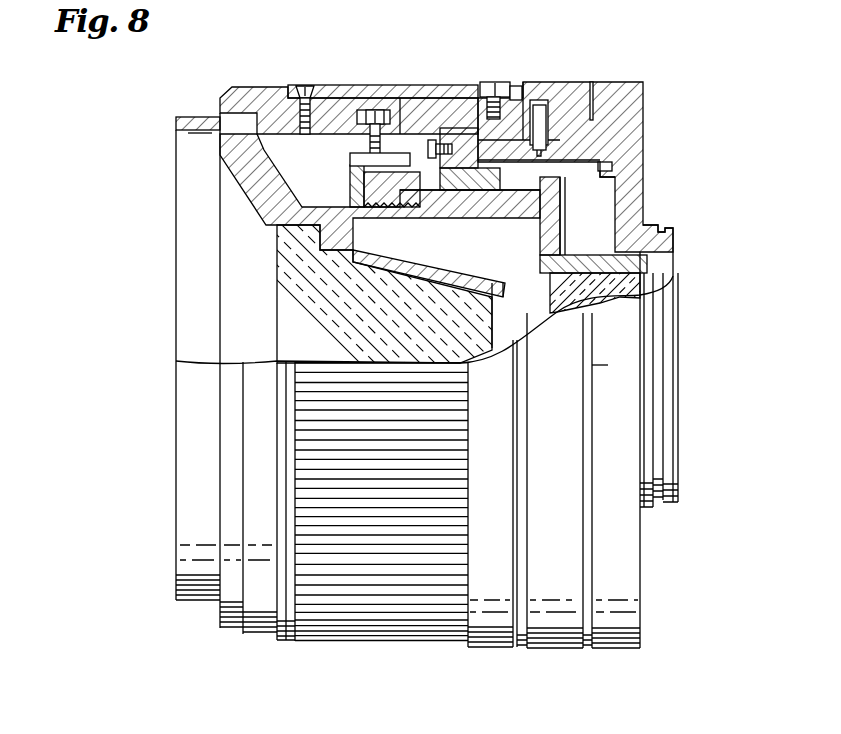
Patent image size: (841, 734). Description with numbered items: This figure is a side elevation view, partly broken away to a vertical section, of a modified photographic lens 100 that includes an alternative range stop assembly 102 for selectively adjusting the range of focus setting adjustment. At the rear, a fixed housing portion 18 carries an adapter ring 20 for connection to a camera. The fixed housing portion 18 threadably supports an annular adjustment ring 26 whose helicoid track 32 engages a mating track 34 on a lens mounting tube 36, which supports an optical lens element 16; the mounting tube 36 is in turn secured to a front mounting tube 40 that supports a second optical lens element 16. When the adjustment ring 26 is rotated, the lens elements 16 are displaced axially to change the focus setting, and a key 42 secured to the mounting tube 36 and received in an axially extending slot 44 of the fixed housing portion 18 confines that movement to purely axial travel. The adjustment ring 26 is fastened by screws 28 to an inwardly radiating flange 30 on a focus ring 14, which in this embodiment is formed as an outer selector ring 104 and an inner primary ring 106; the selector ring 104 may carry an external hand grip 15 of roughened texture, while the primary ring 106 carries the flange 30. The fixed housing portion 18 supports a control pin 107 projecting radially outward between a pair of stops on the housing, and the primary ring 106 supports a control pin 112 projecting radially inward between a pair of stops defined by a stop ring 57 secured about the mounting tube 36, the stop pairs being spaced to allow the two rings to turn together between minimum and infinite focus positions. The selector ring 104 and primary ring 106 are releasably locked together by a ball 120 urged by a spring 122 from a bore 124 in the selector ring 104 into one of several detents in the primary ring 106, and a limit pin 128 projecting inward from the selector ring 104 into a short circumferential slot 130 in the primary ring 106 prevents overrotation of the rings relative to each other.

The modified photographic lens 100 is at (684, 45).
The focus ring 14 is at (272, 70).
The selector ring 104 is at (381, 96).
The control pin 112 is at (353, 100).
The limit pin 128 is at (311, 88).
The circumferential slot 130 is at (294, 136).
The primary ring 106 is at (260, 143).
The range stop assembly 102 is at (308, 173).
The stop ring 57 is at (350, 193).
The screws 28 is at (413, 112).
The adjustment ring 26 is at (455, 120).
The flange 30 is at (435, 160).
The helicoid track 32 is at (468, 188).
The fixed housing portion 18 is at (630, 204).
The control pin 107 is at (548, 82).
The bore 124 is at (480, 88).
The spring 122 is at (512, 86).
The ball 120 is at (538, 104).
The axially extending slot 44 is at (612, 168).
The key 42 is at (565, 180).
The adapter ring 20 is at (667, 243).
The mating track 34 is at (528, 208).
The lens mounting tube 36 is at (552, 245).
The front mounting tube 40 is at (350, 253).
The optical lens element 16 is at (300, 327).
The hand grip 15 is at (350, 634).